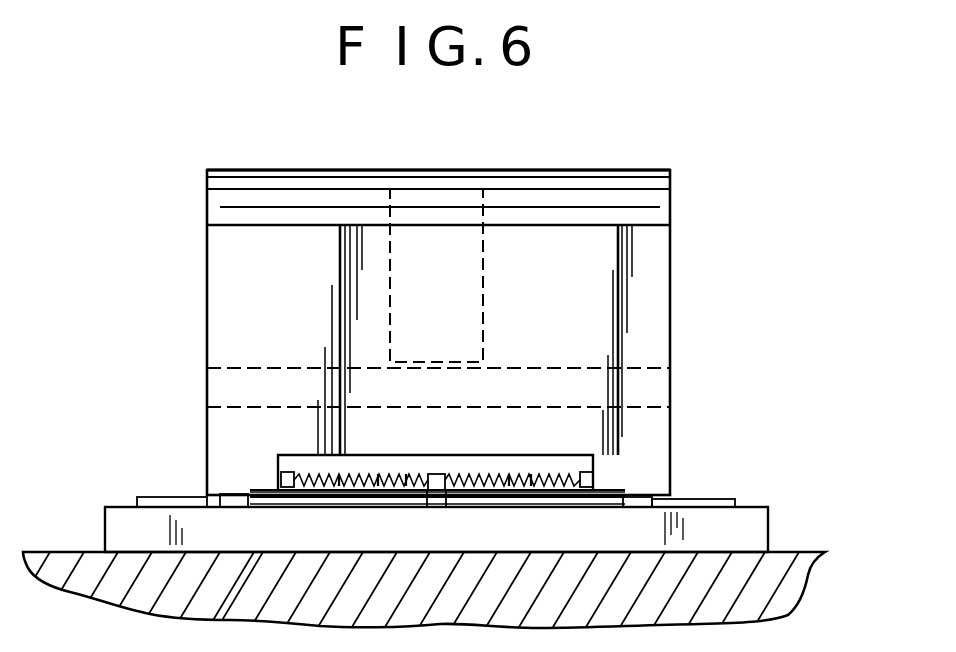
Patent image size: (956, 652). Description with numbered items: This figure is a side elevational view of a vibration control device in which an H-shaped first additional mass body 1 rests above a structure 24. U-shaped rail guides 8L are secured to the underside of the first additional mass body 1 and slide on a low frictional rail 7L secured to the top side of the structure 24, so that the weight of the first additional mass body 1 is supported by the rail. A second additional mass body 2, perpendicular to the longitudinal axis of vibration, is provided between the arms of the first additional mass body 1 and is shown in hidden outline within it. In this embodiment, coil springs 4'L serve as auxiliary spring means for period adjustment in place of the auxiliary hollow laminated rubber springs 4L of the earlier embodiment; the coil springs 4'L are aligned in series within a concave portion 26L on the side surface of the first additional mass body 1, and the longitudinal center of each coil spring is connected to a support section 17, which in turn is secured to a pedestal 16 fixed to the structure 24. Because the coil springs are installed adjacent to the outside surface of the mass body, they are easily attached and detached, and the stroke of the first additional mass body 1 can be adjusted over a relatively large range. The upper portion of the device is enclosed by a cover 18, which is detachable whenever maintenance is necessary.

The first additional mass body 1 is at (225, 263).
The second additional mass body 2 is at (425, 192).
The cover 18 is at (570, 188).
The concave portion 26L is at (470, 468).
The low frictional rail 7L is at (158, 498).
The U-shaped rail guide 8L is at (235, 507).
The auxiliary hollow laminated rubber spring 4L is at (367, 492).
The coil spring 4'L is at (437, 546).
The support section 17 is at (437, 507).
The pedestal 16 is at (757, 527).
The structure 24 is at (746, 611).